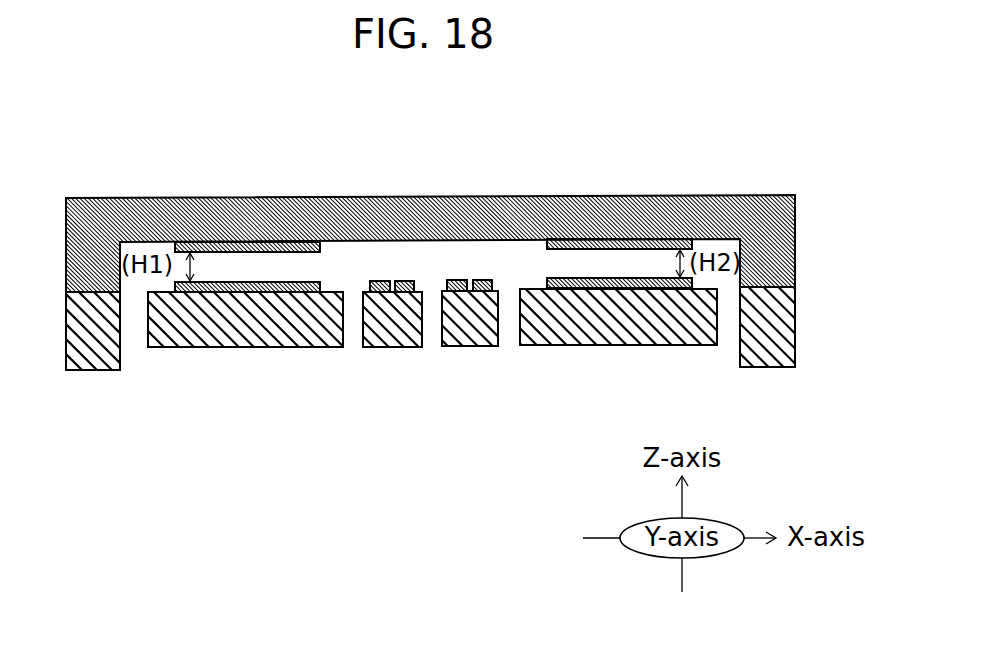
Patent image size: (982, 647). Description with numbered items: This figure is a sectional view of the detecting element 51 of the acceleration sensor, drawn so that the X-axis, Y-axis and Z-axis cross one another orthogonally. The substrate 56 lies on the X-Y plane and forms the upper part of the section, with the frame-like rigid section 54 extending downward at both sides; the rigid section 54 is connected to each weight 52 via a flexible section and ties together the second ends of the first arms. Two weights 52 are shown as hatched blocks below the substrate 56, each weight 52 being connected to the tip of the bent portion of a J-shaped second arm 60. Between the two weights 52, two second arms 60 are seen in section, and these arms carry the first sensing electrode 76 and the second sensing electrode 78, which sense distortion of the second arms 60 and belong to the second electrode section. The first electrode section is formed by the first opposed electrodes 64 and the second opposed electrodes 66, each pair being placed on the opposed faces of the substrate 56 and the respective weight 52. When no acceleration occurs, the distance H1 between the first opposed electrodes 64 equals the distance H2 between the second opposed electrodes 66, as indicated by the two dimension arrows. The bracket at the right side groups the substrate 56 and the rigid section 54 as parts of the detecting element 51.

The detecting element 51 is at (491, 323).
The weight 52 is at (255, 347).
The rigid section 54 is at (801, 193).
The substrate 56 is at (762, 218).
The second arms 60 is at (491, 323).
The first opposed electrodes 64 is at (491, 323).
The second opposed electrodes 66 is at (491, 323).
The first sensing electrode 76 is at (491, 323).
The second sensing electrode 78 is at (491, 323).